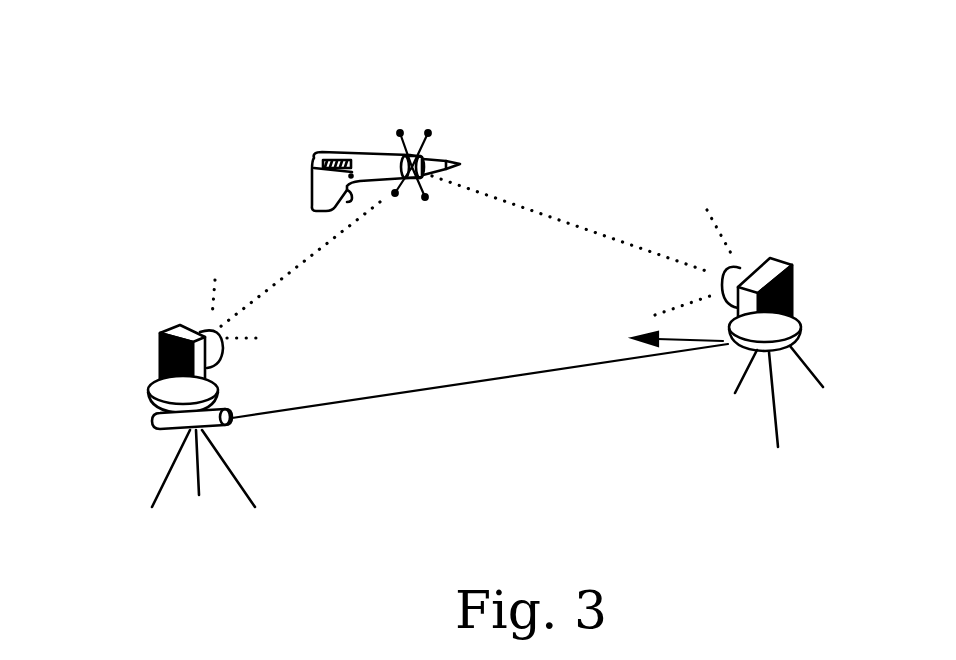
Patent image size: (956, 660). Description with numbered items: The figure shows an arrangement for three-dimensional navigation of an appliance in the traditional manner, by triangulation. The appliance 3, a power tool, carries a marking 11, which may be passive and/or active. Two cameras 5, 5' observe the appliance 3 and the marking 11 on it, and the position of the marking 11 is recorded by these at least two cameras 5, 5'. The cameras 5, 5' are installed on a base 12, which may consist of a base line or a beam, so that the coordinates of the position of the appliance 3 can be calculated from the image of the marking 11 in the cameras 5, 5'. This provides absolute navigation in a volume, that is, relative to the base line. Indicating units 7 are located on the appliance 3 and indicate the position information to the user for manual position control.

The appliance 3 is at (370, 170).
The camera 5 is at (156, 375).
The camera 5' is at (744, 294).
The indicating unit 7 is at (340, 153).
The marking 11 is at (425, 197).
The base 12 is at (400, 392).